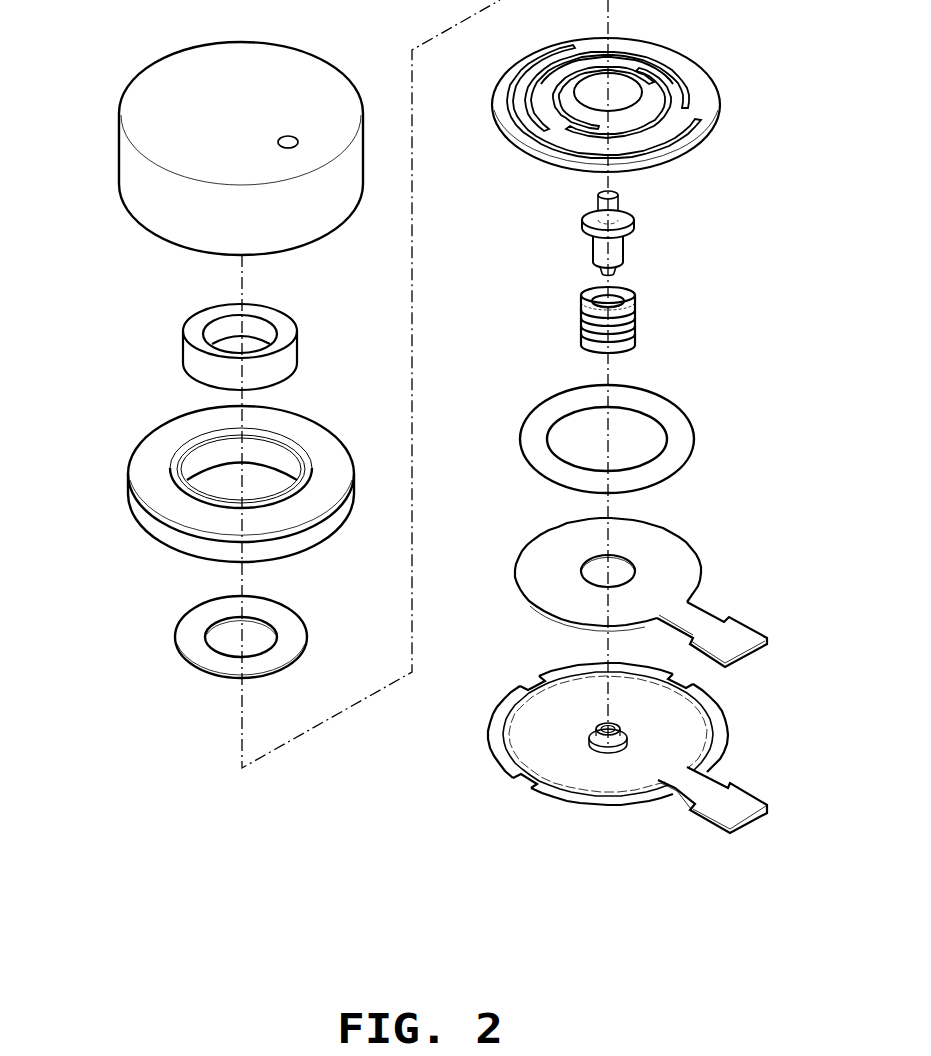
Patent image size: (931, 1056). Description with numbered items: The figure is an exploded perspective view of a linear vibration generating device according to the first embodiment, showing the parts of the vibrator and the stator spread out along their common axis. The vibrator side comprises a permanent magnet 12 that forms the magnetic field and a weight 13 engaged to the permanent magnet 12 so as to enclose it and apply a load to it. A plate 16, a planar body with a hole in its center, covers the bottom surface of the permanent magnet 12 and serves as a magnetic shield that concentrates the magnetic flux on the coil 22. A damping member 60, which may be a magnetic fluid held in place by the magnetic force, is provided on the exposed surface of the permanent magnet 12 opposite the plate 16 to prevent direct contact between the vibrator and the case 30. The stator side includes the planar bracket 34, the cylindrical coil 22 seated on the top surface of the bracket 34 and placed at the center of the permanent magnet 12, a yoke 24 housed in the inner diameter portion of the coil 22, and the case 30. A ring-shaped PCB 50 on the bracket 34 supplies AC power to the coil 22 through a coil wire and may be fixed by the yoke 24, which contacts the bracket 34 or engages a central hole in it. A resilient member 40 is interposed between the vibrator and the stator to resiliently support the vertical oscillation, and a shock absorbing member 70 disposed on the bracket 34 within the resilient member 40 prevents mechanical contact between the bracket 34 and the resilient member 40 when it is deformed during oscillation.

The case 30 is at (137, 176).
The damping member 60 is at (292, 322).
The permanent magnet 12 is at (229, 338).
The weight 13 is at (150, 510).
The plate 16 is at (190, 637).
The resilient member 40 is at (720, 97).
The yoke 24 is at (617, 247).
The coil 22 is at (635, 325).
The shock absorbing member 70 is at (683, 437).
The PCB 50 is at (690, 555).
The bracket 34 is at (717, 730).